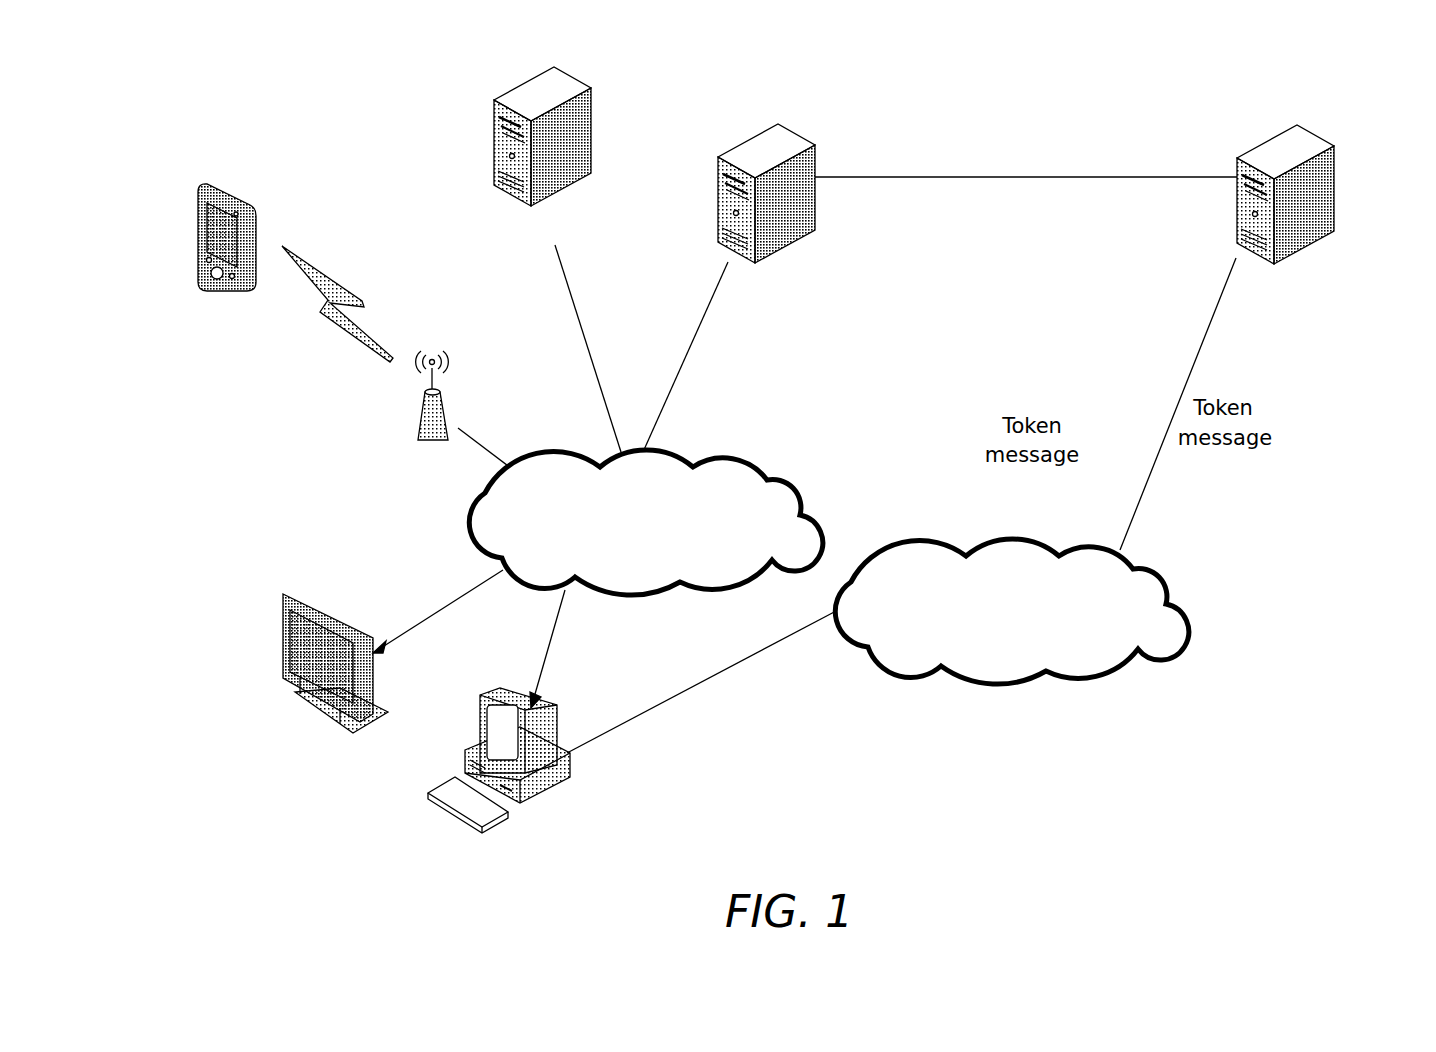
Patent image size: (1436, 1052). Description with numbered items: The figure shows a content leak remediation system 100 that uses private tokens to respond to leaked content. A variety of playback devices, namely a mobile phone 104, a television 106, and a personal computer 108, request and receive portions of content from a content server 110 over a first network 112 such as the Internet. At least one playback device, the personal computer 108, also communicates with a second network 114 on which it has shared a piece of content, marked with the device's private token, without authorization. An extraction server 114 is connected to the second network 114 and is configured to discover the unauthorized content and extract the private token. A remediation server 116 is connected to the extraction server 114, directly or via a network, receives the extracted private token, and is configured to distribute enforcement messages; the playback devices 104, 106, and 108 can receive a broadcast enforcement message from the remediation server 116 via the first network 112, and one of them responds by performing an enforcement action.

The content leak remediation system 100 is at (1217, 805).
The mobile phone 104 is at (245, 198).
The television 106 is at (280, 628).
The personal computer 108 is at (572, 762).
The content server 110 is at (573, 67).
The first network 112 is at (653, 593).
The second network / extraction server 114 is at (1188, 625).
The remediation server 116 is at (795, 133).